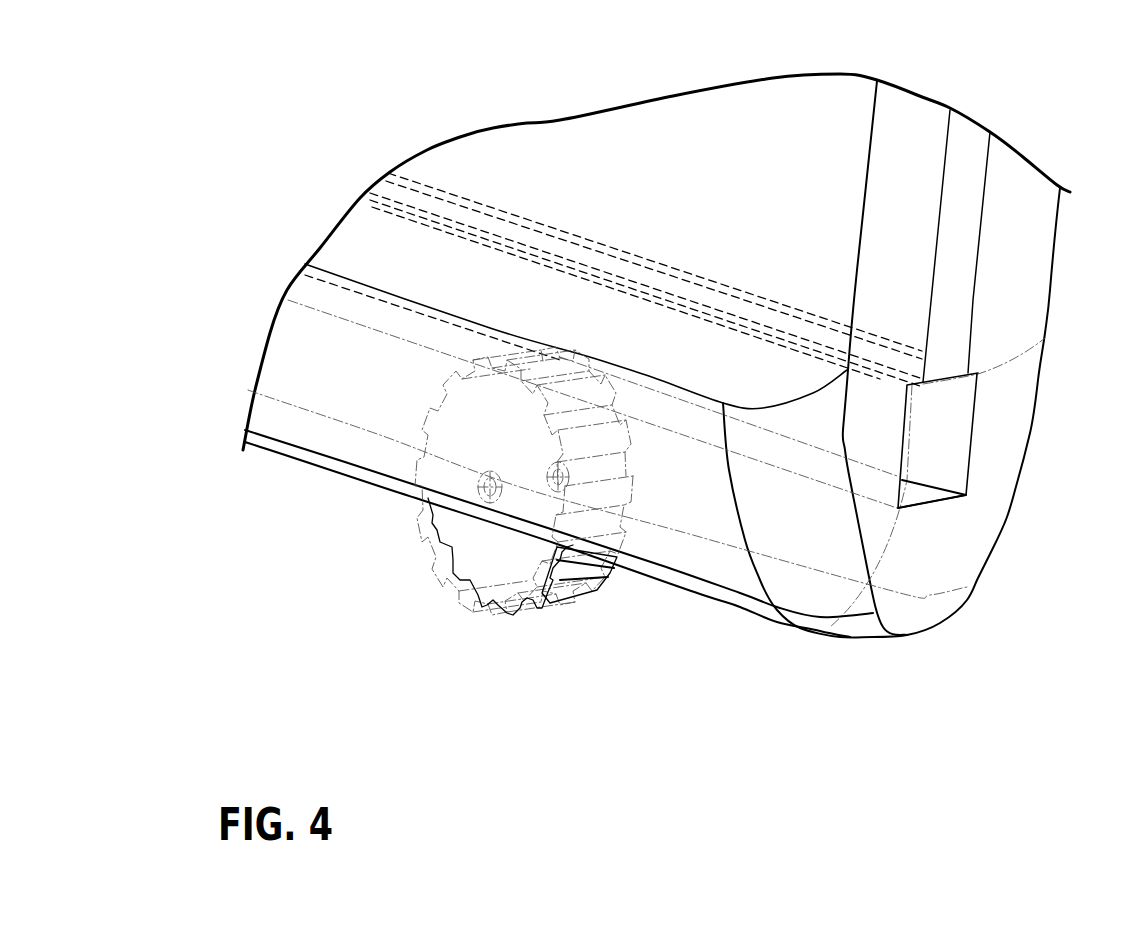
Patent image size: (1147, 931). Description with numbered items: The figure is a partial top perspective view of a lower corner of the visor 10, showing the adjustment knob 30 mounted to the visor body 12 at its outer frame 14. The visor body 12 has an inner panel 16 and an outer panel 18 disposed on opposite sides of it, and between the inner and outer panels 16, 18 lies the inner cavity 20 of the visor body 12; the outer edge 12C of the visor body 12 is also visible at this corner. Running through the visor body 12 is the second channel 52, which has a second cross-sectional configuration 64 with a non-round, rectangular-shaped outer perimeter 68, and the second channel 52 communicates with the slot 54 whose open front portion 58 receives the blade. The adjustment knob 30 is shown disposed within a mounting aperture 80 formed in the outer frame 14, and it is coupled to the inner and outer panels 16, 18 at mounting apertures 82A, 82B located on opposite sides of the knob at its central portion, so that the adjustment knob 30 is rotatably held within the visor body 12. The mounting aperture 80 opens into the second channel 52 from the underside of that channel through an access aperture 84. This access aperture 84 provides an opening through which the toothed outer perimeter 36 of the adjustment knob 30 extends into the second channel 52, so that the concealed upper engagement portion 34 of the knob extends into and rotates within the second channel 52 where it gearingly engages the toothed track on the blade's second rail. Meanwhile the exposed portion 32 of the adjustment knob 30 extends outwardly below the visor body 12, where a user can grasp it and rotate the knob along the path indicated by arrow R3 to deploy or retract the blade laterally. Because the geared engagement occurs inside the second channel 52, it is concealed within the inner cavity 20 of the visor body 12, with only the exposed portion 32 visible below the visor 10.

The visor 10 is at (1049, 448).
The visor body 12 is at (271, 458).
The outer edge 12C is at (1033, 222).
The outer frame 14 is at (788, 587).
The inner panel 16 is at (845, 597).
The outer panel 18 is at (945, 552).
The inner cavity 20 is at (808, 540).
The adjustment knob 30 is at (452, 528).
The exposed portion 32 is at (450, 547).
The upper engagement portion 34 is at (448, 427).
The toothed outer perimeter 36 is at (513, 617).
The second channel 52 is at (367, 250).
The slot 54 is at (530, 157).
The open front portion 58 is at (975, 292).
The second cross-sectional configuration 64 is at (956, 474).
The non-round outer perimeter 68 is at (973, 410).
The mounting aperture 80 is at (633, 547).
The mounting aperture 82A is at (480, 505).
The mounting aperture 82B is at (588, 360).
The access aperture 84 is at (595, 358).
The arrow R3 is at (582, 630).